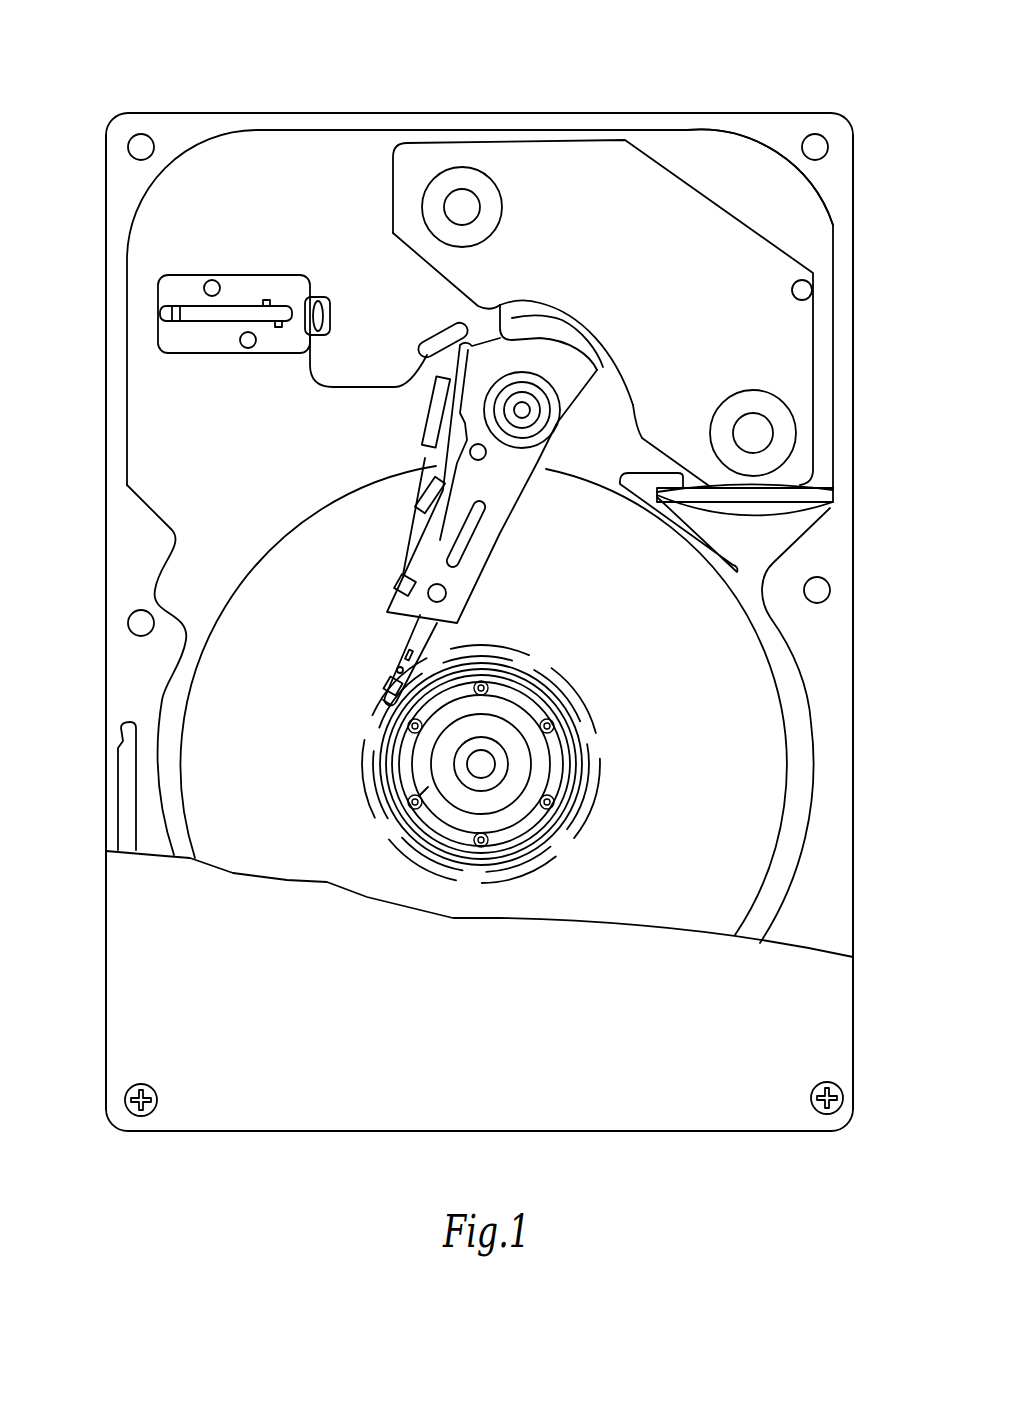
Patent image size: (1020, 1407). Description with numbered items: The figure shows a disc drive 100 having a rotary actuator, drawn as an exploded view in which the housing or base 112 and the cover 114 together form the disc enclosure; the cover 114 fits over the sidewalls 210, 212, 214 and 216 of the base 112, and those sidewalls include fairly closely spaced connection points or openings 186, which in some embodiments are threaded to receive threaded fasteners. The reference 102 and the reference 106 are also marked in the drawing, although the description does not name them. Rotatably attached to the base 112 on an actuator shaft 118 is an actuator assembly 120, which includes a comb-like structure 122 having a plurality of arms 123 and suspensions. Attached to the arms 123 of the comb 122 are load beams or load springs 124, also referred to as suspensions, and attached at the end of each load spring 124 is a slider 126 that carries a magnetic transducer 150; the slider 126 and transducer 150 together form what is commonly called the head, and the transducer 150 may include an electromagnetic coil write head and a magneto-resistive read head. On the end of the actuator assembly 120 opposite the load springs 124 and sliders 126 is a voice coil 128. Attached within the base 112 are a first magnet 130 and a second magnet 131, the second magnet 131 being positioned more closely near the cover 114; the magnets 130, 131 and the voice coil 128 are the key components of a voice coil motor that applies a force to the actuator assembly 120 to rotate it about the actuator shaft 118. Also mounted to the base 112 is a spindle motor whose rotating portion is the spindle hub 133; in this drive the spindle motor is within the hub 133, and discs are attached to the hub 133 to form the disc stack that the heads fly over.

The disc drive 100 is at (367, 45).
The base deck 102 is at (307, 177).
The disc 106 is at (683, 640).
The base 112 is at (812, 913).
The cover 114 is at (172, 940).
The actuator shaft 118 is at (553, 392).
The actuator assembly 120 is at (513, 507).
The comb-like structure 122 is at (793, 264).
The arms 123 is at (393, 650).
The load springs 124 is at (450, 583).
The slider 126 is at (385, 690).
The voice coil 128 is at (523, 317).
The first magnet 130 is at (771, 232).
The second magnet 131 is at (643, 212).
The spindle hub 133 is at (527, 718).
The magnetic transducer 150 is at (378, 710).
The openings 186 is at (141, 147).
The sidewall 210 is at (106, 571).
The sidewall 212 is at (567, 1132).
The sidewall 214 is at (853, 952).
The sidewall 216 is at (495, 112).